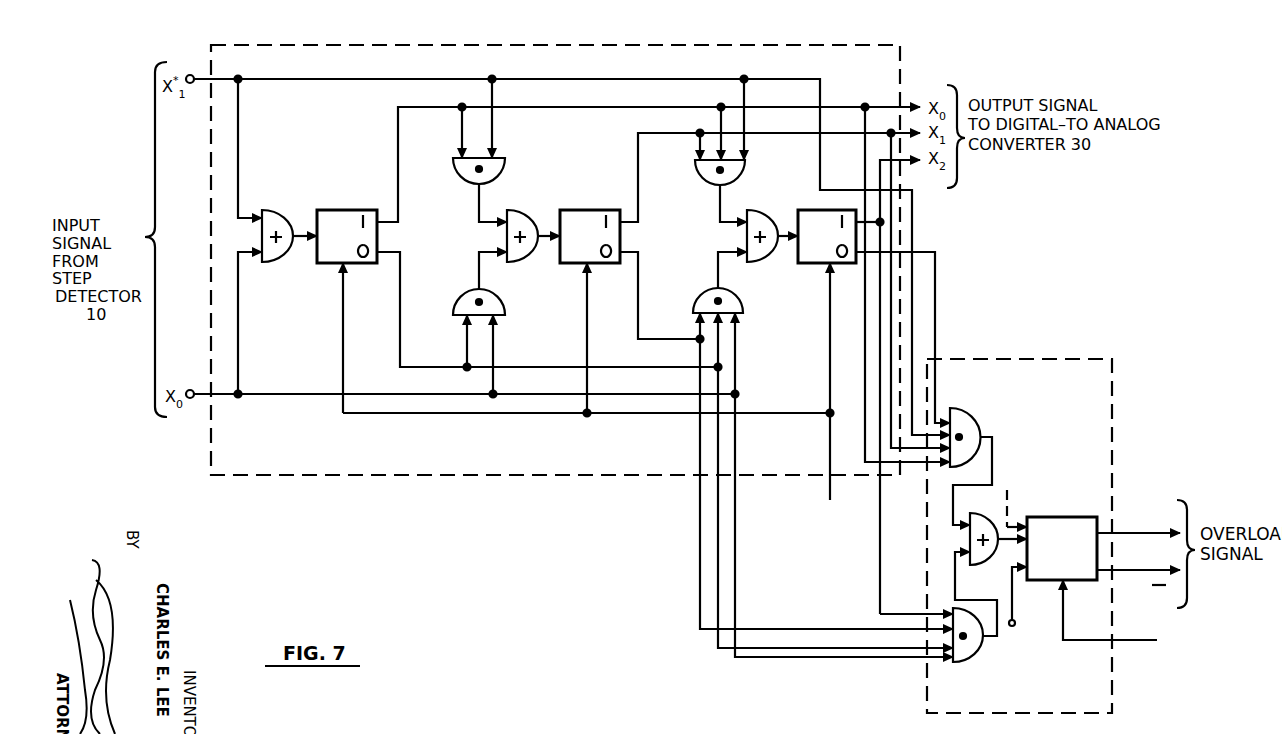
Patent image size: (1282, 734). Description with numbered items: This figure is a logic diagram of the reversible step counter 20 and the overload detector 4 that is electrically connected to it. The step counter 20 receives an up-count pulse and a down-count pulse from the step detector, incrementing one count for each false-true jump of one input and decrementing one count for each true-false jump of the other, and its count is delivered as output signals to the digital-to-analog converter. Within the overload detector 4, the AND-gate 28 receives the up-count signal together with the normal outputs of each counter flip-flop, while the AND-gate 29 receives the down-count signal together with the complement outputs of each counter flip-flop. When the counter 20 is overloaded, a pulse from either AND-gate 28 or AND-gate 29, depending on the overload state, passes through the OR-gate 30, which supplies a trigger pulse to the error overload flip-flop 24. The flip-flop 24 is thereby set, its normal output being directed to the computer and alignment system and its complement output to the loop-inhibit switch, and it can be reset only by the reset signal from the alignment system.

The reversible step counter 20 is at (467, 452).
The overload detector 4 is at (1068, 678).
The AND-gate 28 is at (971, 454).
The AND-gate 29 is at (975, 622).
The OR-gate 30 is at (998, 552).
The error overload flip-flop 24 is at (1093, 565).